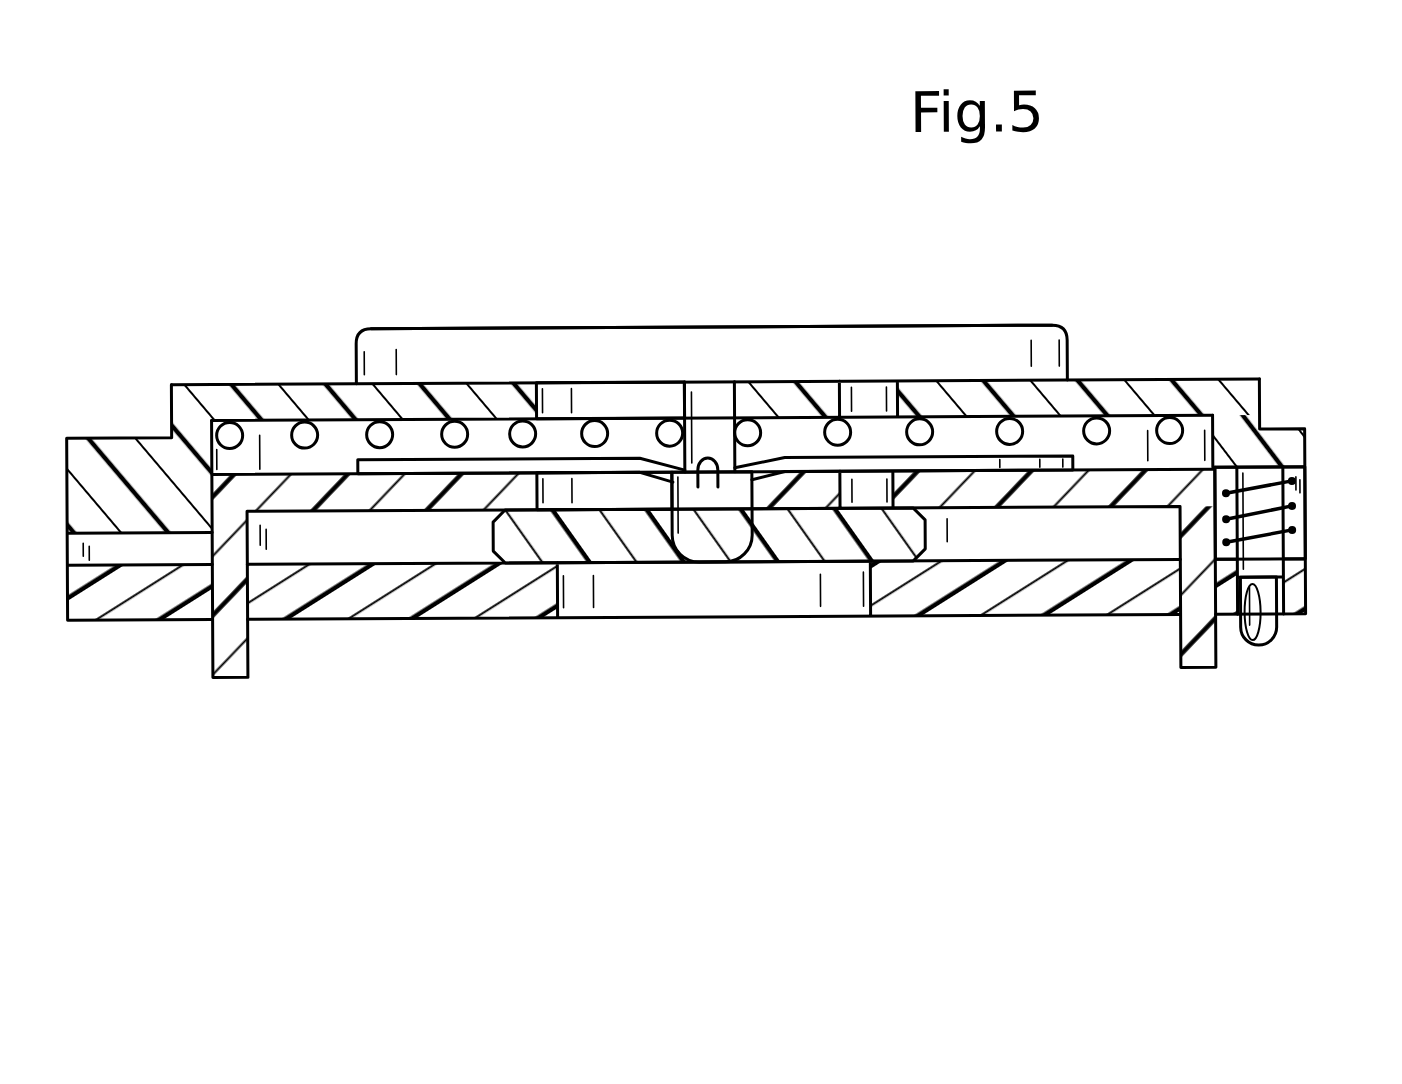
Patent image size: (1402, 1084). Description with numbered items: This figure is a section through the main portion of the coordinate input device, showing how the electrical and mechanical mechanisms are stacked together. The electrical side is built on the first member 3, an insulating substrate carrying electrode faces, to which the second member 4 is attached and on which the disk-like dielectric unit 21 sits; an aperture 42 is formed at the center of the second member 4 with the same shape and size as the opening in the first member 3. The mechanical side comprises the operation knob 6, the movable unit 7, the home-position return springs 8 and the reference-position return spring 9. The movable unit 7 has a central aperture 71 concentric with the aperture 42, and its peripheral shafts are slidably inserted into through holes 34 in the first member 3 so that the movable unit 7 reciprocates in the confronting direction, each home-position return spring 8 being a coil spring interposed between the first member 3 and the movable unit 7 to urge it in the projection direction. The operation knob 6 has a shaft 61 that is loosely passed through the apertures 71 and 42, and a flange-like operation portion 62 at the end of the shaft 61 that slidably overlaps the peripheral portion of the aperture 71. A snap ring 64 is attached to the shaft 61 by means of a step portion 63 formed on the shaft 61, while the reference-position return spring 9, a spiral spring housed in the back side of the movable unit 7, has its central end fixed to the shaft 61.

The first member 3 is at (1000, 617).
The second member 4 is at (455, 510).
The operation knob 6 is at (897, 326).
The movable unit 7 is at (1131, 380).
The home-position return spring 8 is at (1307, 548).
The reference-position return spring 9 is at (1191, 438).
The dielectric unit 21 is at (833, 557).
The through hole 34 is at (1257, 647).
The aperture 42 is at (617, 493).
The shaft 61 is at (733, 399).
The operation portion 62 is at (661, 337).
The step portion 63 is at (725, 470).
The snap ring 64 is at (419, 463).
The aperture 71 is at (553, 388).